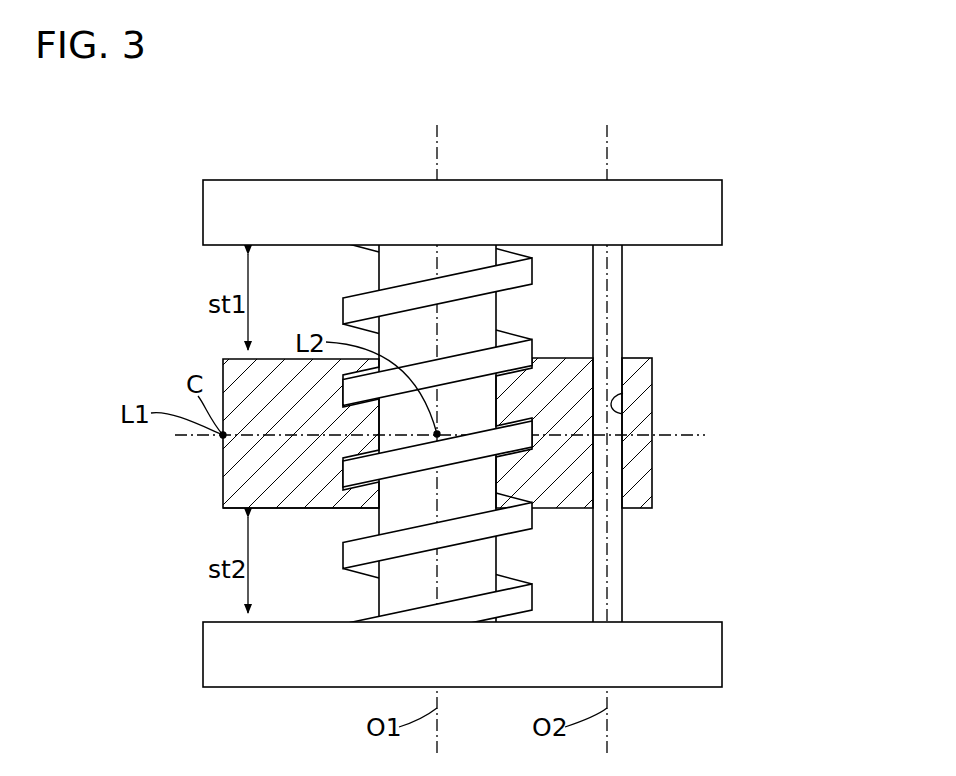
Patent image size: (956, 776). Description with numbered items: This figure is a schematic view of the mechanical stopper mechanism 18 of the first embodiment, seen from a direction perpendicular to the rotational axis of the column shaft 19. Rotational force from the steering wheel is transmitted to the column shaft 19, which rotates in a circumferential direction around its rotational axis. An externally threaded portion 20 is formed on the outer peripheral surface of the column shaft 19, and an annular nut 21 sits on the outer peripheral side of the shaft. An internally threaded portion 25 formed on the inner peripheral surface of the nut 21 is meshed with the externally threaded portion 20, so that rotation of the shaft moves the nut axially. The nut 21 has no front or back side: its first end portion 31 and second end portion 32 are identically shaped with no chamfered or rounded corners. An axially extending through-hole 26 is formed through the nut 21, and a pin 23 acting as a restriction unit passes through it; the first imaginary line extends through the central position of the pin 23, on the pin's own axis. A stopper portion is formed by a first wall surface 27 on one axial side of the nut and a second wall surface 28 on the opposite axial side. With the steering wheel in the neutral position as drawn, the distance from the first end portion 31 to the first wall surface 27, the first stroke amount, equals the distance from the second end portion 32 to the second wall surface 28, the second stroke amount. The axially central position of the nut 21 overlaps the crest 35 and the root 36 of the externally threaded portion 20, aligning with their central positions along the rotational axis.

The mechanical stopper mechanism 18 is at (521, 231).
The column shaft 19 is at (502, 553).
The externally threaded portion 20 is at (444, 432).
The nut 21 is at (658, 370).
The pin 23 is at (623, 320).
The internally threaded portion 25 is at (444, 447).
The through-hole 26 is at (625, 411).
The first wall surface 27 is at (697, 246).
The second wall surface 28 is at (703, 622).
The first end portion 31 is at (240, 358).
The second end portion 32 is at (237, 508).
The crest 35 is at (537, 438).
The root 36 is at (437, 434).